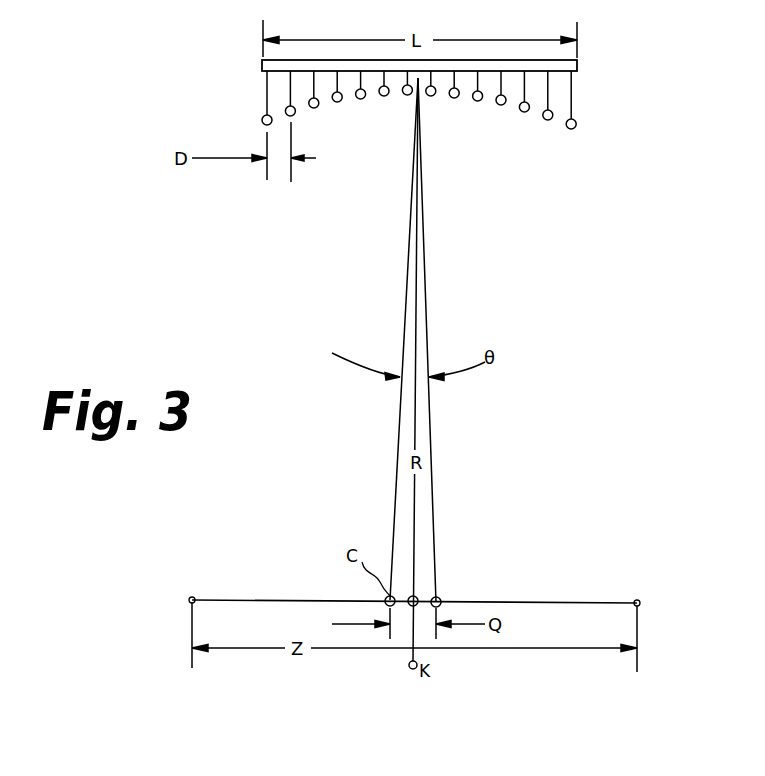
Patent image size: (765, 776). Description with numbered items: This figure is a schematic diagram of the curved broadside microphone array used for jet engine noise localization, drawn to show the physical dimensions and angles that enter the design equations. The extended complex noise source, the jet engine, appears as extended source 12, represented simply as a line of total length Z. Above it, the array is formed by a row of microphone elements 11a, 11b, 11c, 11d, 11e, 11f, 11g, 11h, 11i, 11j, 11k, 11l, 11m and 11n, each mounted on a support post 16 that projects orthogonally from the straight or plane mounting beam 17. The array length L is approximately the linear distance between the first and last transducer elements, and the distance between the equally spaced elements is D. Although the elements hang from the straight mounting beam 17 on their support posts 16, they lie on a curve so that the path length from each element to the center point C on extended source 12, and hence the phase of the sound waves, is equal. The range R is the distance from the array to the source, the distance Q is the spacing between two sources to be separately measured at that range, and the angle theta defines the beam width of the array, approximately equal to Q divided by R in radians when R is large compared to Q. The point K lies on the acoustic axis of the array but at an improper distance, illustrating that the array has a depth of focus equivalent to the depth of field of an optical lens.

The microphone element 11a is at (262, 117).
The microphone element 11b is at (291, 116).
The microphone element 11c is at (314, 108).
The microphone element 11d is at (338, 102).
The microphone element 11e is at (361, 99).
The microphone element 11f is at (384, 96).
The microphone element 11g is at (407, 95).
The microphone element 11h is at (431, 96).
The microphone element 11i is at (454, 98).
The microphone element 11j is at (477, 101).
The microphone element 11k is at (501, 105).
The microphone element 11l is at (524, 112).
The microphone element 11m is at (547, 120).
The microphone element 11n is at (576, 122).
The extended source 12 is at (257, 600).
The support post 16 is at (572, 98).
The mounting beam 17 is at (577, 69).